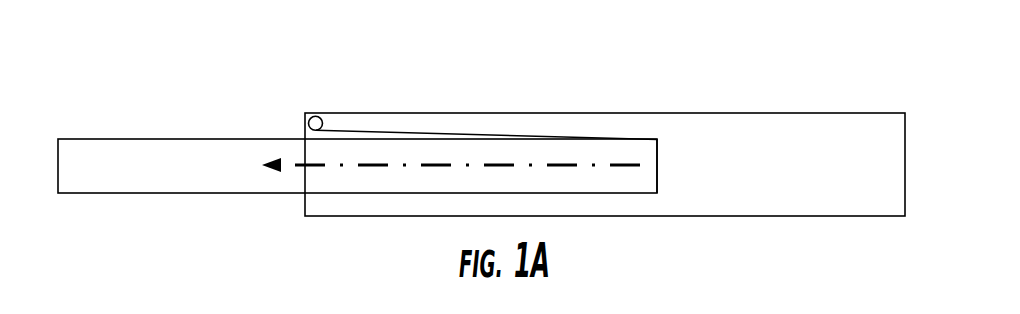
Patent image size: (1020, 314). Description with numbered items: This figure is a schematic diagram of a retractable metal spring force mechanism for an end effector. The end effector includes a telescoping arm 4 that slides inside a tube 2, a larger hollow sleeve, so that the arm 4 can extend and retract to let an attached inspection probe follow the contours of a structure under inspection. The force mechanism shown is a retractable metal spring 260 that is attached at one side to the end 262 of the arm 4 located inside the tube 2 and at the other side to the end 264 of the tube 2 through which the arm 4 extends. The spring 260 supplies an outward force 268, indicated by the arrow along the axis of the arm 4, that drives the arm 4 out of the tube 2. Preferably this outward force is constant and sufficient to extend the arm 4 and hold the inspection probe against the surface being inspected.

The tube 2 is at (820, 135).
The telescoping arm 4 is at (230, 150).
The retractable metal spring 260 is at (356, 129).
The end of the arm 262 is at (659, 136).
The end of the tube 264 is at (311, 115).
The outward force 268 is at (463, 163).